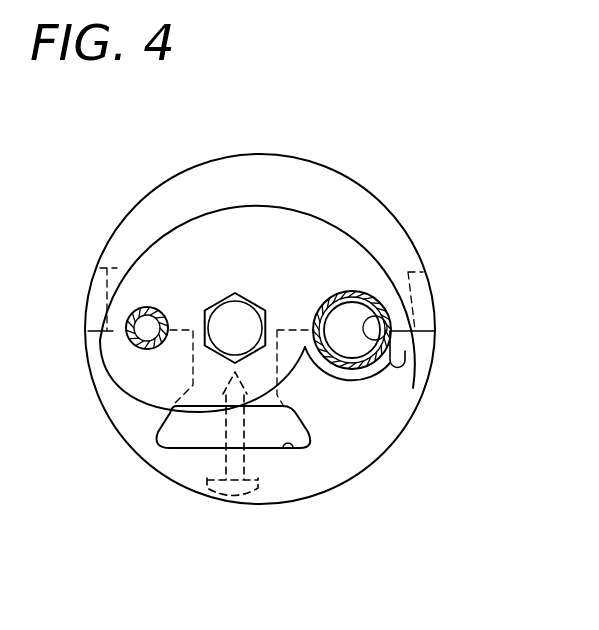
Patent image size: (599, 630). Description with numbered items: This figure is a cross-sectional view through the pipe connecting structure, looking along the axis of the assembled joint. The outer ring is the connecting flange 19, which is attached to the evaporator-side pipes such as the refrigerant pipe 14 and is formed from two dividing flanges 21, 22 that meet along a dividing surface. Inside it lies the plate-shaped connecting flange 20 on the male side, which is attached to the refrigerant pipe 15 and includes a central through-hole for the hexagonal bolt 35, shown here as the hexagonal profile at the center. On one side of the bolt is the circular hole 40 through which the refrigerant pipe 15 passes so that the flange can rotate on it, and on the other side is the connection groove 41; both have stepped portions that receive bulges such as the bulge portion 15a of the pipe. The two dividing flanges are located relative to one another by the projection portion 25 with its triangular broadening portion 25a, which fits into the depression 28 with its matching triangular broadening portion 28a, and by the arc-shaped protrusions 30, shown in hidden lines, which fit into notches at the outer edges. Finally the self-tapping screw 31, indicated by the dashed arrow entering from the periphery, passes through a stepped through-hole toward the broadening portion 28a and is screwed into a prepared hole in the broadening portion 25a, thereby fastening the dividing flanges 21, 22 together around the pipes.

The connecting flange 19 is at (433, 212).
The connecting flange 20 is at (287, 203).
The dividing flange 21 is at (261, 153).
The dividing flange 22 is at (358, 391).
The refrigerant pipe 14 is at (135, 347).
The refrigerant pipe 15 is at (387, 368).
The bulge portion 15a is at (353, 386).
The projection portion 25 is at (212, 372).
The triangular broadening portion 25a is at (187, 440).
The depression 28 is at (283, 405).
The triangular broadening portion 28a is at (291, 450).
The arc-shaped protrusion 30 is at (107, 266).
The self-tapping screw 31 is at (235, 500).
The hexagonal bolt 35 is at (248, 296).
The circular hole 40 is at (153, 306).
The connection groove 41 is at (405, 351).